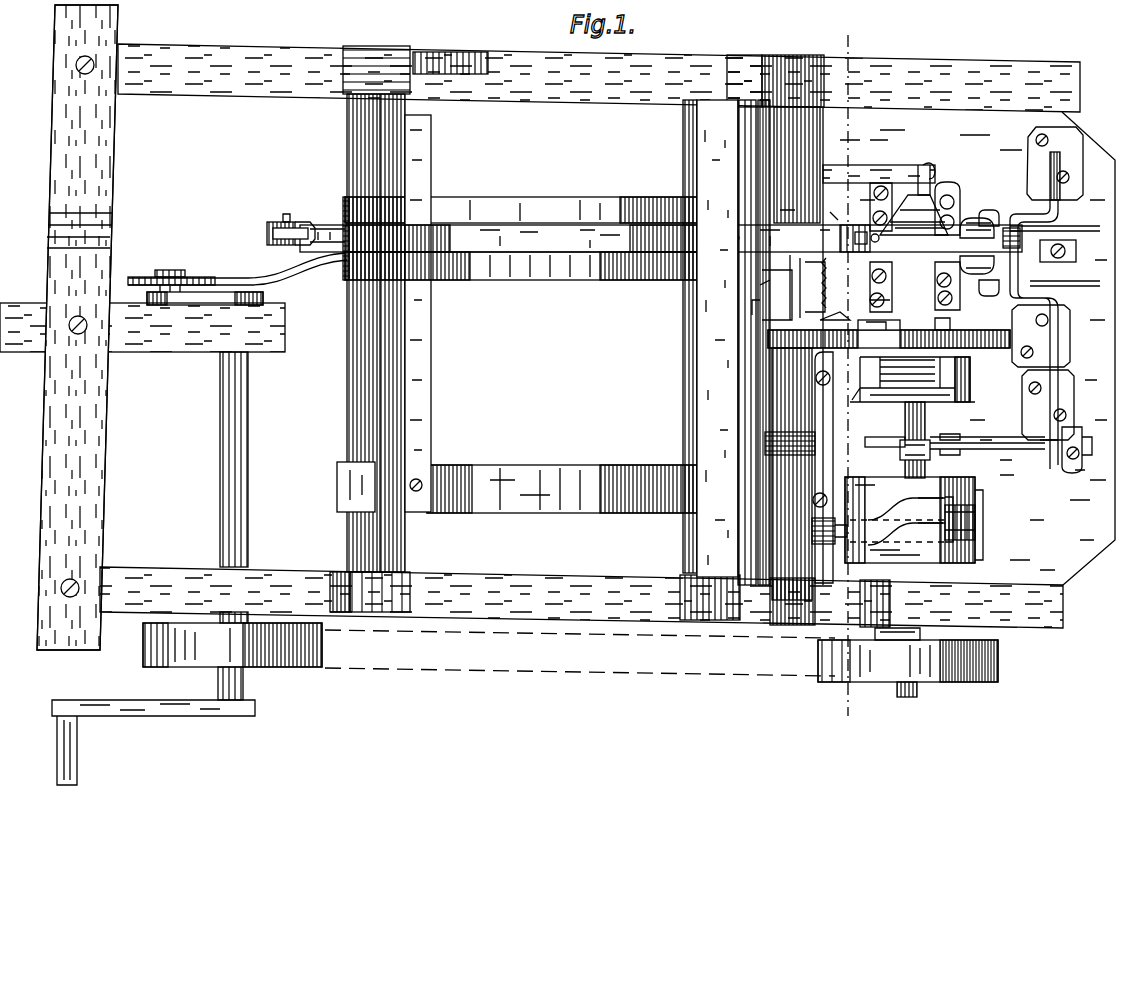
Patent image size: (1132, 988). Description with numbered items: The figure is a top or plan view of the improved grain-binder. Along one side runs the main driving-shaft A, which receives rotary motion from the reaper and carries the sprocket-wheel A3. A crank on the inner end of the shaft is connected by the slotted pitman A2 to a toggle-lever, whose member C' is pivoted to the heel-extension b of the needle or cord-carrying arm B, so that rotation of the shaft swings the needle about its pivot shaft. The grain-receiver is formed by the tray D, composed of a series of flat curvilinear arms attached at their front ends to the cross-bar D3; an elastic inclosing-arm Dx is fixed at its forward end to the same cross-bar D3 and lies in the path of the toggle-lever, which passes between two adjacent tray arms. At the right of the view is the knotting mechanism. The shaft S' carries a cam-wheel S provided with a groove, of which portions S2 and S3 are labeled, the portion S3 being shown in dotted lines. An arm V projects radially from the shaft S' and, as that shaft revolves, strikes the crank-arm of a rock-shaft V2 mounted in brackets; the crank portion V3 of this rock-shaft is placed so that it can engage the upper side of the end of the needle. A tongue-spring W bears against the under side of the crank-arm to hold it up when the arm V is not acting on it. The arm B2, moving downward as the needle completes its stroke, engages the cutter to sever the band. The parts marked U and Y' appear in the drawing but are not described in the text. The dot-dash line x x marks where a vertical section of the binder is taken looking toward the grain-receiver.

The main driving-shaft A is at (248, 448).
The pitman A2 is at (237, 279).
The sprocket-wheel A3 is at (232, 645).
The needle or cord-carrying arm B is at (661, 238).
The arm B2 is at (885, 200).
The toggle-lever member C' is at (275, 229).
The heel-extension b is at (327, 227).
The tray D is at (201, 304).
The elastic inclosing-arm Dx is at (558, 265).
The cross-bar D3 is at (712, 342).
The cam-wheel S is at (910, 520).
The shaft S' is at (925, 606).
The groove portion S2 is at (975, 515).
The groove portion S3 is at (988, 527).
The toothed bar U is at (889, 334).
The arm V is at (895, 455).
The rock-shaft V2 is at (1054, 398).
The crank portion V3 is at (1010, 292).
The tongue-spring W is at (1040, 450).
The rod Y' is at (955, 434).
The section line x is at (837, 375).